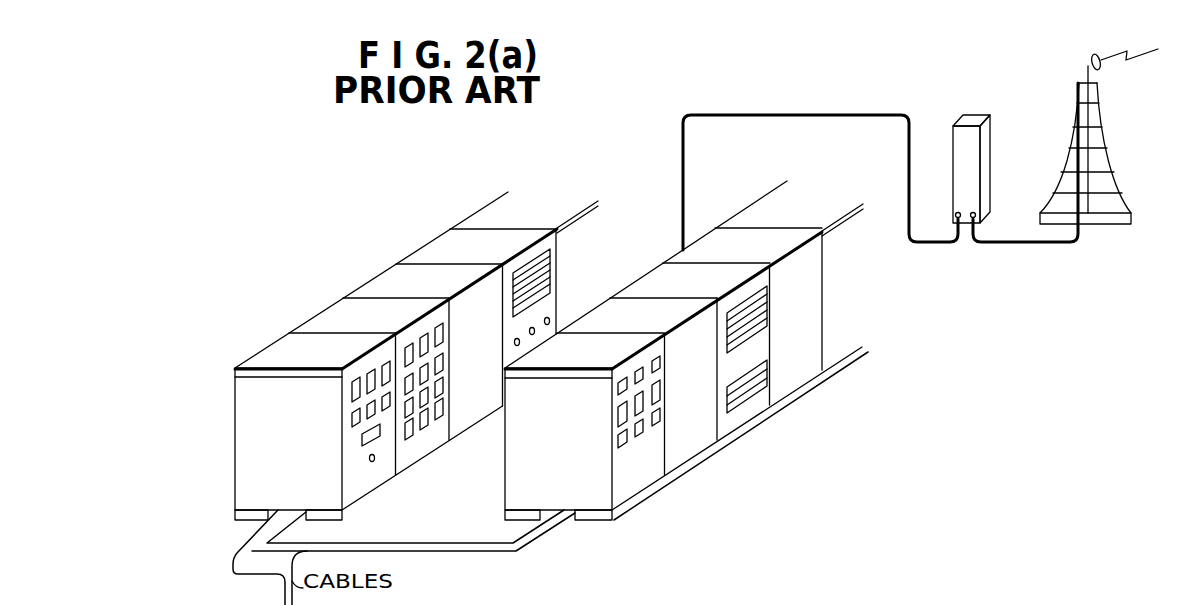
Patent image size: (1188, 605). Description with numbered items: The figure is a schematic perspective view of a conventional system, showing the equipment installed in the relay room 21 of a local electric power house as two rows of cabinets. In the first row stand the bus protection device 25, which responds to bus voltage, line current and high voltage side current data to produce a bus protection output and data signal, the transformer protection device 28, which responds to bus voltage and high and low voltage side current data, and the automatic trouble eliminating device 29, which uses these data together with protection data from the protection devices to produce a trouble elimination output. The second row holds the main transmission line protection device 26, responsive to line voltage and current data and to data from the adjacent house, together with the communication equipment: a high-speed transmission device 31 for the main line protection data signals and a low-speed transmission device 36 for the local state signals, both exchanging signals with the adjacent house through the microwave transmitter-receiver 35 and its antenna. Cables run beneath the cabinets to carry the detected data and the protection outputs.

The relay room 21 is at (264, 171).
The bus protection device 25 is at (250, 358).
The transformer protection device 28 is at (298, 320).
The automatic trouble eliminating device 29 is at (428, 245).
The main transmission line protection device 26 is at (643, 497).
The high-speed transmission device 31 is at (767, 302).
The low-speed transmission device 36 is at (763, 387).
The microwave transmitter-receiver 35 is at (954, 115).